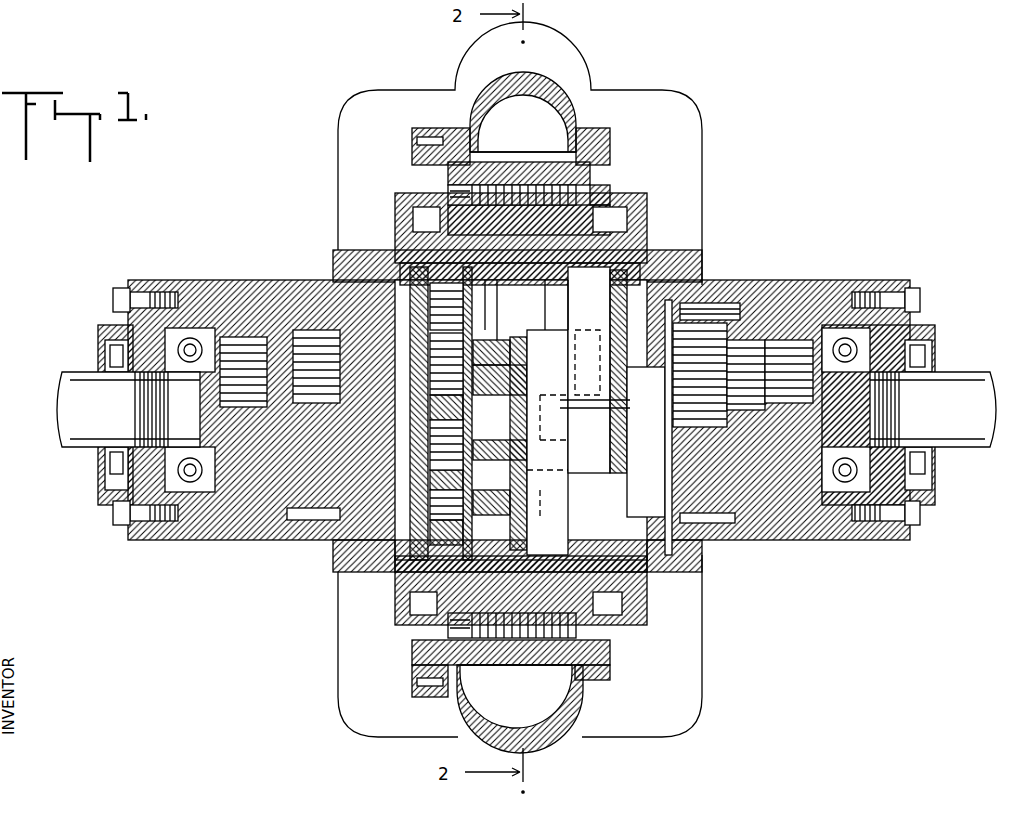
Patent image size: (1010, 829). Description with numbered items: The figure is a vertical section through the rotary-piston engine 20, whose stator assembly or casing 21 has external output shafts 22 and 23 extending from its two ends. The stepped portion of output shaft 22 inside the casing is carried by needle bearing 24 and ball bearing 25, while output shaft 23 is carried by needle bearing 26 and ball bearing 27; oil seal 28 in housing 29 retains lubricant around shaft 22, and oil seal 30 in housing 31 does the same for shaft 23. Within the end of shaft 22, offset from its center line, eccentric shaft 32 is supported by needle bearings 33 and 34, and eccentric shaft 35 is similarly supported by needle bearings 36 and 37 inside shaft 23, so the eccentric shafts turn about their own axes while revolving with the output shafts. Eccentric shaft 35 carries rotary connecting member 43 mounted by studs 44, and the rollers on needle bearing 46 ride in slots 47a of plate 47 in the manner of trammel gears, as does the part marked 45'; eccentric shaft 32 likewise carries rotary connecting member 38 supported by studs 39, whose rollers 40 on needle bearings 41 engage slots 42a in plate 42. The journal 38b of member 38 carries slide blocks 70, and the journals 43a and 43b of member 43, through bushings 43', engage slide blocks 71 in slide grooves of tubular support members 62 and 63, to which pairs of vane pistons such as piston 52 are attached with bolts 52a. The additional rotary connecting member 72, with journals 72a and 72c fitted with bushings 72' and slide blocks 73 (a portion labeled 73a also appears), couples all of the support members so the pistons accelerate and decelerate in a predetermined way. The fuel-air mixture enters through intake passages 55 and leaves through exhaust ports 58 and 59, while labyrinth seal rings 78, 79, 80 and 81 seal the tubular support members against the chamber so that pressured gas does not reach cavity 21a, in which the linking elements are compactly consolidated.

The engine 20 is at (715, 132).
The stator assembly or casing 21 is at (724, 288).
The cavity 21a is at (605, 320).
The output shaft 22 is at (962, 385).
The output shaft 23 is at (75, 378).
The needle bearing 24 is at (705, 298).
The ball bearing 25 is at (843, 343).
The needle bearing 26 is at (322, 305).
The ball bearing 27 is at (192, 338).
The oil seal 28 is at (932, 470).
The housing 29 is at (935, 330).
The oil seal 30 is at (97, 462).
The housing 31 is at (100, 330).
The eccentric shaft 32 is at (748, 362).
The needle bearing 33 is at (790, 345).
The needle bearing 34 is at (705, 525).
The eccentric shaft 35 is at (300, 350).
The needle bearing 36 is at (330, 522).
The needle bearing 37 is at (243, 345).
The rotary connecting member 38 is at (618, 430).
The journal 38b is at (589, 370).
The stud 39 is at (638, 360).
The roller 40 is at (655, 262).
The needle bearing 41 is at (683, 270).
The plate 42 is at (640, 545).
The slot 42a is at (640, 500).
The rotary connecting member 43 is at (394, 470).
The bushing 43' is at (449, 400).
The journal 43a is at (448, 445).
The journal 43b is at (466, 306).
The stud 44 is at (385, 401).
The gear 45' is at (389, 450).
The needle bearing 46 is at (410, 360).
The plate 47 is at (395, 555).
The slot 47a is at (394, 350).
The vane piston 52 is at (583, 175).
The bolt 52a is at (462, 192).
The intake passage 55 is at (425, 218).
The exhaust port 58 is at (525, 105).
The exhaust port 59 is at (522, 705).
The tubular support member 62 is at (472, 322).
The tubular support member 63 is at (463, 525).
The slide block 70 is at (616, 427).
The slide block 71 is at (463, 332).
The additional rotary connecting member 72 is at (516, 443).
The bushing 72' is at (539, 442).
The journal 72a is at (491, 359).
The journal 72c is at (491, 505).
The slide block 73 is at (480, 490).
The pinion 73a is at (449, 364).
The labyrinth seal ring 78 is at (491, 301).
The labyrinth seal ring 79 is at (498, 307).
The labyrinth seal ring 80 is at (532, 305).
The labyrinth seal ring 81 is at (585, 304).